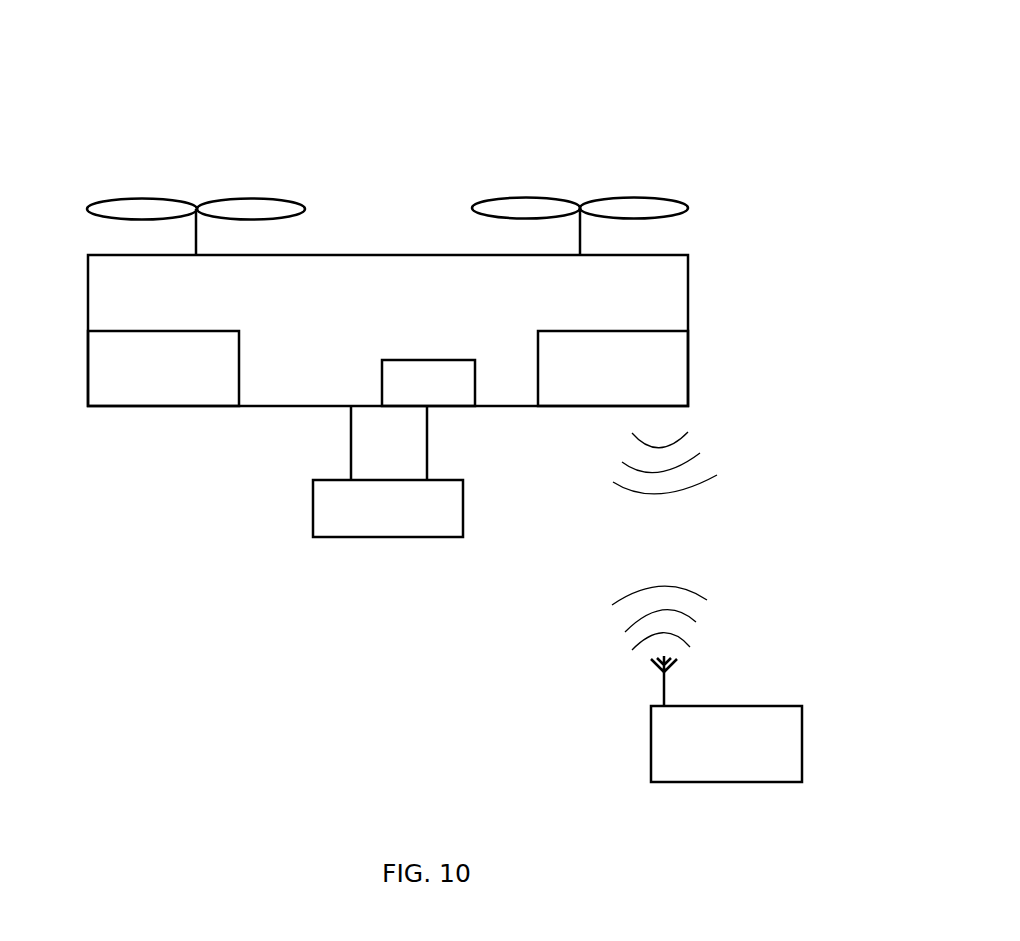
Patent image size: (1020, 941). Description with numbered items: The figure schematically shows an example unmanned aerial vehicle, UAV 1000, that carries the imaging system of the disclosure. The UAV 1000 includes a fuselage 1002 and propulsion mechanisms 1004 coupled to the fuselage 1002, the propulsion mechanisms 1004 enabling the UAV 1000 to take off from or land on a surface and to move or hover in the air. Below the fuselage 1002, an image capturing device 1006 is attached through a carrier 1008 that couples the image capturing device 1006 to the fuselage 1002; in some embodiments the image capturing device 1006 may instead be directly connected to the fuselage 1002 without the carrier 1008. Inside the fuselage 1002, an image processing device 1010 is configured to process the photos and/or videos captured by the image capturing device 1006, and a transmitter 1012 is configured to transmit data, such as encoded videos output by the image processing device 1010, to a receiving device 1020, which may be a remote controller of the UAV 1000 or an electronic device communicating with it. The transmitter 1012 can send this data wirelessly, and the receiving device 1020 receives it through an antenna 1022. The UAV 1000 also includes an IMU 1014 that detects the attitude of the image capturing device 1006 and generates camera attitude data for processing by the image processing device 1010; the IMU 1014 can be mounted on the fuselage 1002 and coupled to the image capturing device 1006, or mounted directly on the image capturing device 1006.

The unmanned aerial vehicle 1000 is at (512, 98).
The fuselage 1002 is at (388, 330).
The propulsion mechanisms 1004 is at (142, 197).
The image capturing device 1006 is at (388, 508).
The carrier 1008 is at (389, 443).
The image processing device 1010 is at (163, 368).
The transmitter 1012 is at (613, 368).
The IMU 1014 is at (428, 383).
The receiving device 1020 is at (726, 744).
The antenna 1022 is at (663, 685).